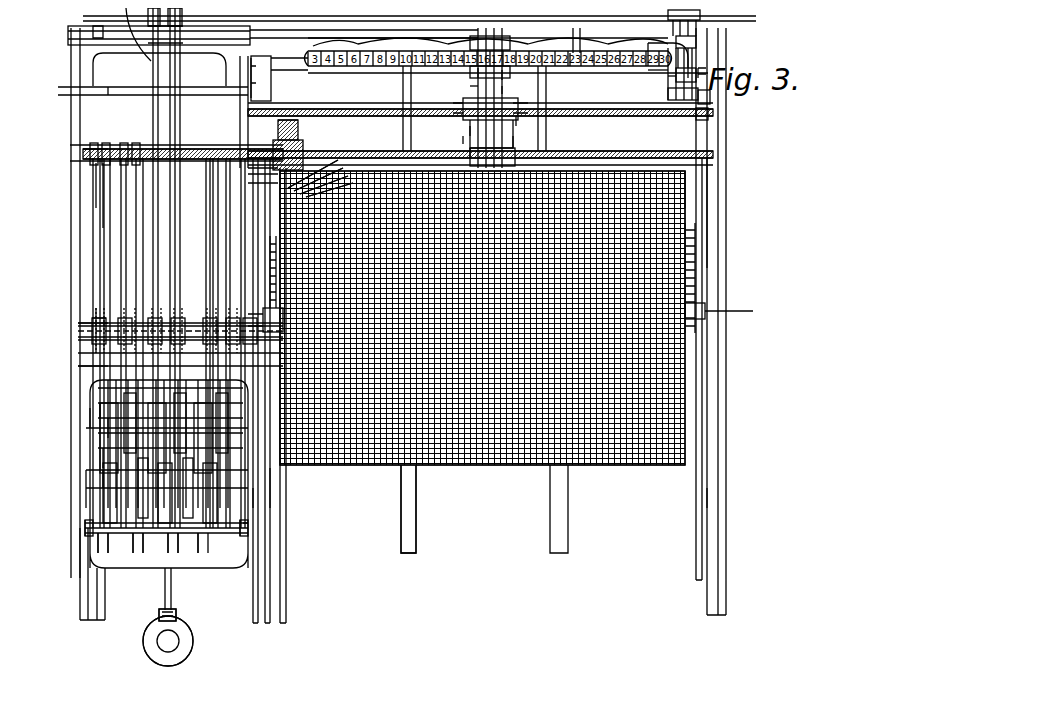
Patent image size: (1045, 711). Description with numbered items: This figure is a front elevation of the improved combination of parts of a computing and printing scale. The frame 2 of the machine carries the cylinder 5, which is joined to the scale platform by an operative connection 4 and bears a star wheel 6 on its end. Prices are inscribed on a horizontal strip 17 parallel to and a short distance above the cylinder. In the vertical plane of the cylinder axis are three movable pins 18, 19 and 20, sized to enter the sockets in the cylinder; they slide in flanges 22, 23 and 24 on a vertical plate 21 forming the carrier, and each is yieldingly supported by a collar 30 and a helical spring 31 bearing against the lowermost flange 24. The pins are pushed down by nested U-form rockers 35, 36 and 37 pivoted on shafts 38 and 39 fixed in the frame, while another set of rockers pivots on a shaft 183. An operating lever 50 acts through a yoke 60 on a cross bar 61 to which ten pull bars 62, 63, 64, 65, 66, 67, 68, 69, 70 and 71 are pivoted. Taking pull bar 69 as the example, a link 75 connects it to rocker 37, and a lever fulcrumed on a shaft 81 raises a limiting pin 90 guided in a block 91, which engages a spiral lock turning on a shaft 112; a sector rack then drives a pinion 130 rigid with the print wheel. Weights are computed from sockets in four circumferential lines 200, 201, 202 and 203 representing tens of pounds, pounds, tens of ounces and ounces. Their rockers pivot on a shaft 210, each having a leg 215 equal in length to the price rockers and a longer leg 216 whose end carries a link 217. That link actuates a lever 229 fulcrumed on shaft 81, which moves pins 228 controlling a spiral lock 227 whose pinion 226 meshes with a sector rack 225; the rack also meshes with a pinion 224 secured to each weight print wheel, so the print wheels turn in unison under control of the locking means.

The frame 2 is at (705, 216).
The operative connection 4 is at (698, 485).
The cylinder 5 is at (465, 457).
The star wheel 6 is at (678, 173).
The horizontal strip 17 is at (556, 40).
The pin 18 is at (465, 68).
The pin 19 is at (462, 80).
The pin 20 is at (500, 68).
The vertical plate 21 is at (462, 121).
The flange 22 is at (500, 82).
The flange 23 is at (512, 114).
The lowermost flange 24 is at (512, 134).
The collar 30 is at (455, 131).
The helical spring 31 is at (462, 144).
The U-form rocker 35 is at (688, 45).
The U-form rocker 36 is at (690, 50).
The U-form rocker 37 is at (700, 62).
The shaft 38 is at (115, 88).
The shaft 39 is at (660, 70).
The operating lever 50 is at (185, 628).
The yoke 60 is at (168, 604).
The cross bar 61 is at (77, 528).
The pull bar 62 is at (90, 530).
The pull bar 63 is at (100, 535).
The pull bar 64 is at (125, 535).
The pull bar 65 is at (137, 538).
The pull bar 66 is at (162, 538).
The pull bar 67 is at (172, 538).
The pull bar 68 is at (192, 538).
The pull bar 69 is at (242, 525).
The pull bar 70 is at (245, 520).
The pull bar 71 is at (250, 490).
The link 75 is at (250, 85).
The shaft 81 is at (70, 325).
The limiting pin 90 is at (70, 363).
The block 91 is at (82, 380).
The shaft 112 is at (100, 418).
The pinion 130 is at (272, 490).
The shaft 183 is at (84, 24).
The circumferential line 200 is at (315, 160).
The circumferential line 201 is at (320, 170).
The circumferential line 202 is at (330, 170).
The circumferential line 203 is at (338, 178).
The shaft 210 is at (72, 150).
The leg 215 is at (88, 160).
The leg 216 is at (292, 120).
The link 217 is at (95, 215).
The pinion 224 is at (85, 480).
The sector rack 225 is at (92, 465).
The pinion 226 is at (92, 445).
The spiral lock 227 is at (92, 402).
The pins 228 is at (88, 345).
The lever 229 is at (88, 315).